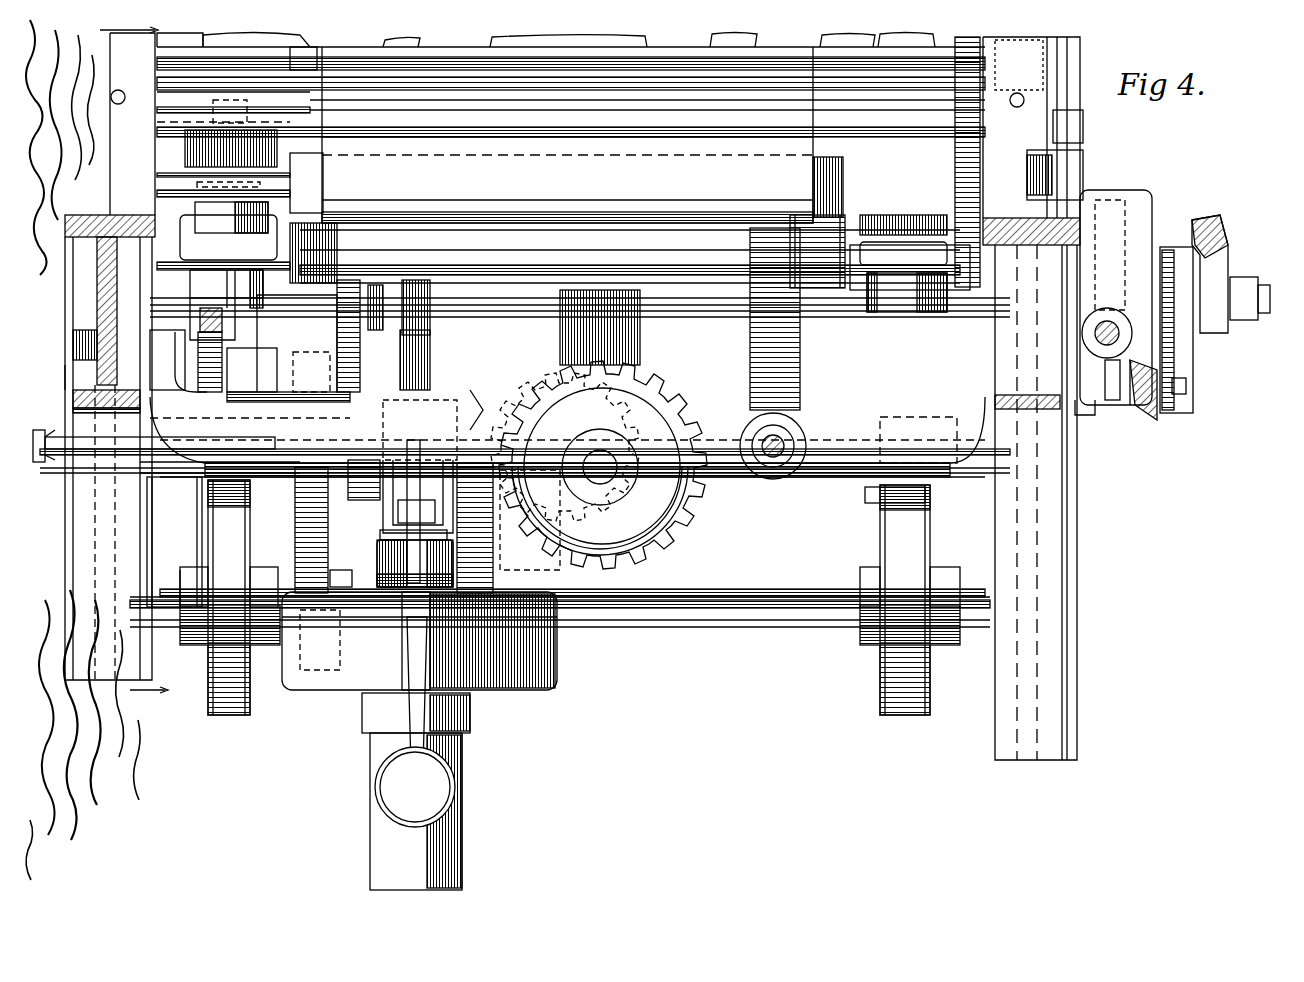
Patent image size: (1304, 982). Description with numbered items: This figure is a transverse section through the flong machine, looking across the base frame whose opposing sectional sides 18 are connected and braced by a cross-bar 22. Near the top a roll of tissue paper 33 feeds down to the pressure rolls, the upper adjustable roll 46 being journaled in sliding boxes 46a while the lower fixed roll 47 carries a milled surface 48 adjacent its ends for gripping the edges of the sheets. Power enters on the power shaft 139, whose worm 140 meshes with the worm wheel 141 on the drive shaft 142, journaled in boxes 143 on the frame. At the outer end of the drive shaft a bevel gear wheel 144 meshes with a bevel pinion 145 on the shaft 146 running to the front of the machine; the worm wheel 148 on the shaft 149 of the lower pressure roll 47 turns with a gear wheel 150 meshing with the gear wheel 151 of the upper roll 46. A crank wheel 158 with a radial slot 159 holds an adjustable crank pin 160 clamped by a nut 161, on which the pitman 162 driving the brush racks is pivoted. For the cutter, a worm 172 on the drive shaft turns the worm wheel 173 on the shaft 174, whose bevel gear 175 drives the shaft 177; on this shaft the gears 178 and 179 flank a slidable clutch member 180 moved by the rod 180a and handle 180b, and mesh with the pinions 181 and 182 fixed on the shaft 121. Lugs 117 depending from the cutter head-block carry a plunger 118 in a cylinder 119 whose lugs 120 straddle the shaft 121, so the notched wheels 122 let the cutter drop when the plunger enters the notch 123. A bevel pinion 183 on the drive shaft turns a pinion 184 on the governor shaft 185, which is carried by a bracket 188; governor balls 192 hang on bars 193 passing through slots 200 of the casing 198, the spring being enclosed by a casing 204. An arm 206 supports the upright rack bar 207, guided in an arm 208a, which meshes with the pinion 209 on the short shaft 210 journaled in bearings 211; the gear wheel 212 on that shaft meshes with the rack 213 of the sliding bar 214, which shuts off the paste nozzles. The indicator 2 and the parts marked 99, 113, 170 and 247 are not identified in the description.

The section line 2 is at (134, 370).
The sectional sides 18 is at (95, 225).
The cross-bar 22 is at (562, 494).
The roll of tissue paper 33 is at (567, 135).
The pressure roll 46 is at (305, 180).
The sliding boxes 46a is at (513, 122).
The pressure roll 47 is at (630, 256).
The milled surface 48 is at (340, 240).
The gear hub 99 is at (595, 480).
The frame part 113 is at (82, 377).
The parallel lugs 117 is at (988, 136).
The plunger 118 is at (200, 165).
The cylinder 119 is at (248, 268).
The parallel lugs 120 is at (190, 523).
The rotating shaft 121 is at (648, 625).
The notched wheel 122 is at (238, 715).
The notch 123 is at (208, 483).
The power shaft 139 is at (795, 470).
The worm 140 is at (765, 480).
The worm wheel 141 is at (750, 370).
The drive shaft 142 is at (705, 315).
The boxes 143 is at (1068, 420).
The bevel gear wheel 144 is at (1160, 400).
The beveled pinion 145 is at (1134, 400).
The shaft 146 is at (1108, 391).
The worm wheel 148 is at (1125, 220).
The shaft 149 is at (910, 255).
The gear wheel 150 is at (963, 172).
The gear wheel 151 is at (975, 180).
The crank wheel 158 is at (1196, 358).
The radial slot 159 is at (1188, 388).
The crank pin 160 is at (1255, 285).
The clamping nut 161 is at (1276, 298).
The pitman 162 is at (1222, 235).
The gear 170 is at (565, 443).
The worm 172 is at (580, 298).
The worm wheel 173 is at (602, 459).
The shaft 174 is at (700, 500).
The bevel gear 175 is at (640, 520).
The shaft 177 is at (720, 478).
The gear 178 is at (391, 563).
The gear 179 is at (470, 548).
The clutch member 180 is at (206, 480).
The rod 180a is at (47, 468).
The handle 180b is at (40, 432).
The pinion 181 is at (470, 520).
The pinion 182 is at (497, 575).
The bevel pinion 183 is at (402, 336).
The pinion 184 is at (468, 410).
The governor shaft 185 is at (387, 537).
The bracket 188 is at (297, 343).
The governor balls 192 is at (455, 787).
The bars 193 is at (370, 725).
The casing 198 is at (545, 638).
The slot 200 is at (470, 695).
The casing 204 is at (462, 852).
The arm 206 is at (400, 575).
The rack bar 207 is at (415, 475).
The arm 208a is at (432, 498).
The pinion 209 is at (420, 464).
The short shaft 210 is at (305, 358).
The bearings 211 is at (345, 370).
The gear wheel 212 is at (185, 368).
The rack 213 is at (185, 345).
The sliding bar 214 is at (198, 308).
The gear 247 is at (245, 300).